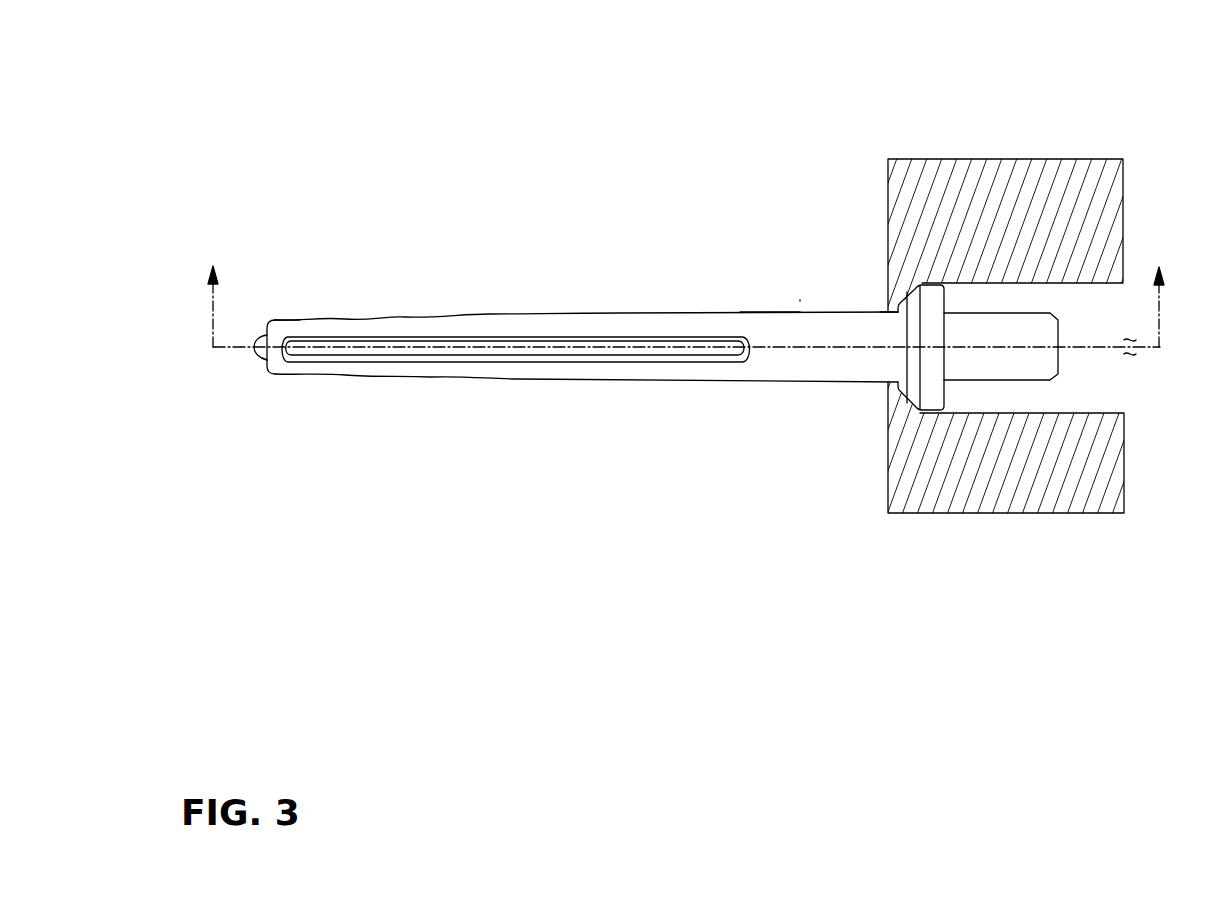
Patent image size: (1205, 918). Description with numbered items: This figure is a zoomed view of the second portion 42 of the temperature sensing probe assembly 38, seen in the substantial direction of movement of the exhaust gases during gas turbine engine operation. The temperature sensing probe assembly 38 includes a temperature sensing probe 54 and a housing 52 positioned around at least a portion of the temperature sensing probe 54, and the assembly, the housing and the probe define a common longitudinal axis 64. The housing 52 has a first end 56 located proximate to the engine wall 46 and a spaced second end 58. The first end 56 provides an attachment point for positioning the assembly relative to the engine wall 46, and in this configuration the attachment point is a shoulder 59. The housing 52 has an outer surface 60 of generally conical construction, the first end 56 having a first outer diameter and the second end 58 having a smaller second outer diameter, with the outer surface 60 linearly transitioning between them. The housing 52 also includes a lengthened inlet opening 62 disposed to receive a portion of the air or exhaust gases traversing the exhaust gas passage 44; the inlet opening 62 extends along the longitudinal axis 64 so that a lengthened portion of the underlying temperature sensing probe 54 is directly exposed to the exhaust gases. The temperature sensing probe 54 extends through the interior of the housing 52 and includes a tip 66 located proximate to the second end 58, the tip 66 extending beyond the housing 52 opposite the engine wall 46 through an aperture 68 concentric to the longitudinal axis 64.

The temperature sensing probe assembly 38 is at (511, 67).
The second portion 42 is at (802, 271).
The exhaust gas passage 44 is at (828, 556).
The engine wall 46 is at (973, 178).
The housing 52 is at (828, 372).
The temperature sensing probe 54 is at (377, 342).
The first end 56 is at (878, 309).
The second end 58 is at (287, 315).
The shoulder 59 is at (930, 292).
The outer surface 60 is at (780, 326).
The inlet opening 62 is at (420, 333).
The longitudinal axis 64 is at (243, 350).
The tip 66 is at (260, 333).
The aperture 68 is at (263, 364).